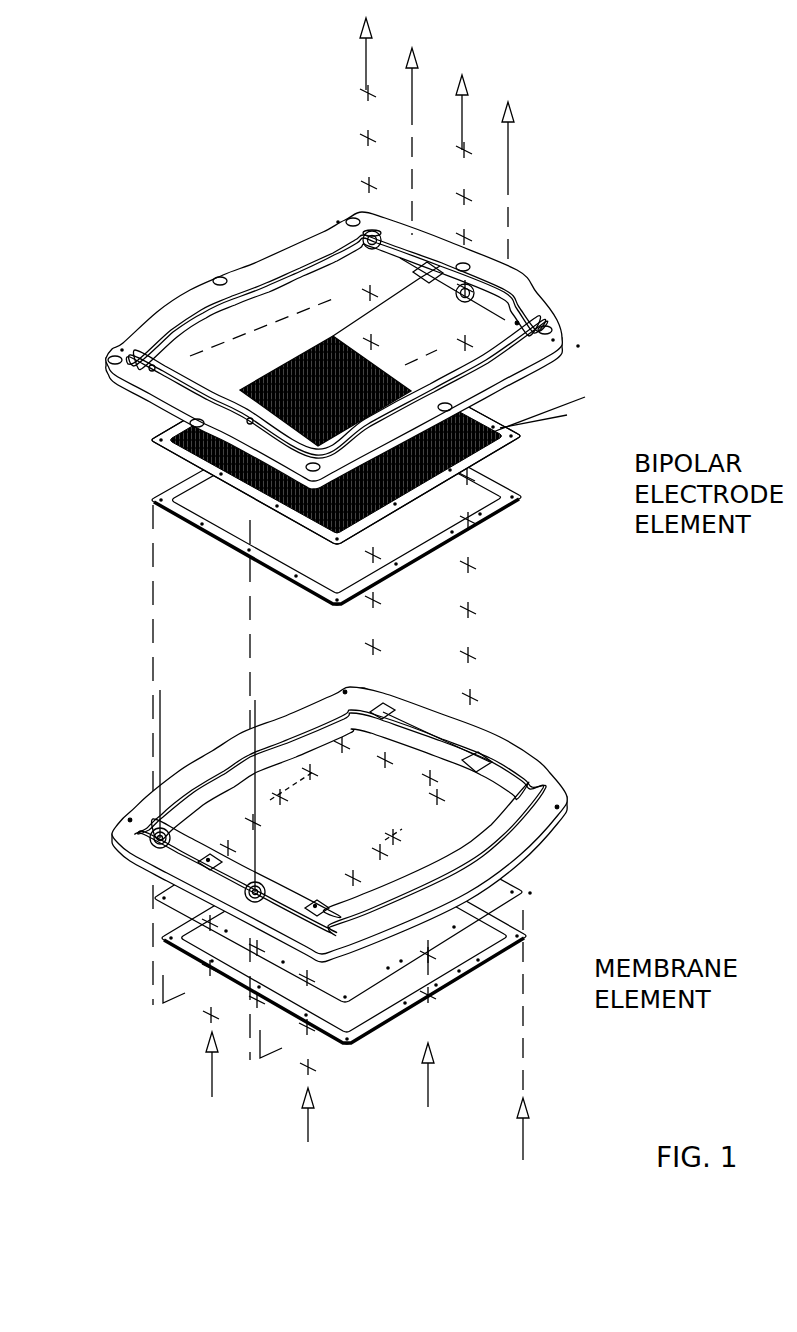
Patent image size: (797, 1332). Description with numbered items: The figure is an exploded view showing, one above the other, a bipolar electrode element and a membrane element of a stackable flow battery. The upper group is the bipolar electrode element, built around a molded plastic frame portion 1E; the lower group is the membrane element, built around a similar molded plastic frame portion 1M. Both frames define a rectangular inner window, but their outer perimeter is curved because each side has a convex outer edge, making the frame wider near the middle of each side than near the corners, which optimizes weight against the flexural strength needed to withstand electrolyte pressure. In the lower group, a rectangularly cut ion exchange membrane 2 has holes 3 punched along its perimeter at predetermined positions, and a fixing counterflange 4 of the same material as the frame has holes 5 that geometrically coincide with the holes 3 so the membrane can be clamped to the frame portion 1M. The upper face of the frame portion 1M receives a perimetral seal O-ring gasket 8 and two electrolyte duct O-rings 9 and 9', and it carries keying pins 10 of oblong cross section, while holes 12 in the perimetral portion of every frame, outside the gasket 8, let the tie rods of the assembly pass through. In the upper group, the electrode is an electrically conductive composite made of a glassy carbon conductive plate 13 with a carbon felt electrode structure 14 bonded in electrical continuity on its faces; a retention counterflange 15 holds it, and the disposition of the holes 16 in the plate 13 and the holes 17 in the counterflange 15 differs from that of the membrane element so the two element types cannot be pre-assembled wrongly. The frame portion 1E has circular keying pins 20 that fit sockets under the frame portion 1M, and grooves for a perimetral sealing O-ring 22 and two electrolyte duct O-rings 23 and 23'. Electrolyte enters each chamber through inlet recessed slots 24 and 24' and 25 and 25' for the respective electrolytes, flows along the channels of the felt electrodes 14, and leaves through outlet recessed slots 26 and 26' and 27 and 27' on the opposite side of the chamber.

The frame portion of bipolar electrode element 1E is at (522, 357).
The frame portion of membrane element 1M is at (552, 787).
The membrane 2 is at (523, 885).
The holes 3 is at (530, 893).
The fixing counterflange 4 is at (505, 952).
The gasket holes 5 is at (478, 963).
The perimetral seal O-ring gasket 8 is at (490, 760).
The electrolyte duct O-ring 9 is at (125, 860).
The electrolyte duct O-ring 9' is at (191, 913).
The keying pins 10 is at (345, 692).
The holes 12 is at (217, 280).
The conductive plate 13 is at (585, 397).
The carbon felt electrode structure 14 is at (567, 415).
The retention counterflange 15 is at (483, 515).
The holes 16 is at (524, 437).
The holes 17 is at (427, 552).
The keying pins 20 is at (338, 222).
The perimetral sealing O-ring 22 is at (497, 360).
The electrolyte duct O-ring 23 is at (301, 230).
The electrolyte duct O-ring 23' is at (507, 271).
The inlet recessed slot 24 is at (161, 884).
The inlet recessed slot 24' is at (229, 971).
The inlet recessed slot 25 is at (107, 392).
The inlet recessed slot 25' is at (170, 446).
The outlet recessed slot 26 is at (408, 687).
The outlet recessed slot 26' is at (520, 762).
The outlet recessed slot 27 is at (475, 229).
The outlet recessed slot 27' is at (562, 293).